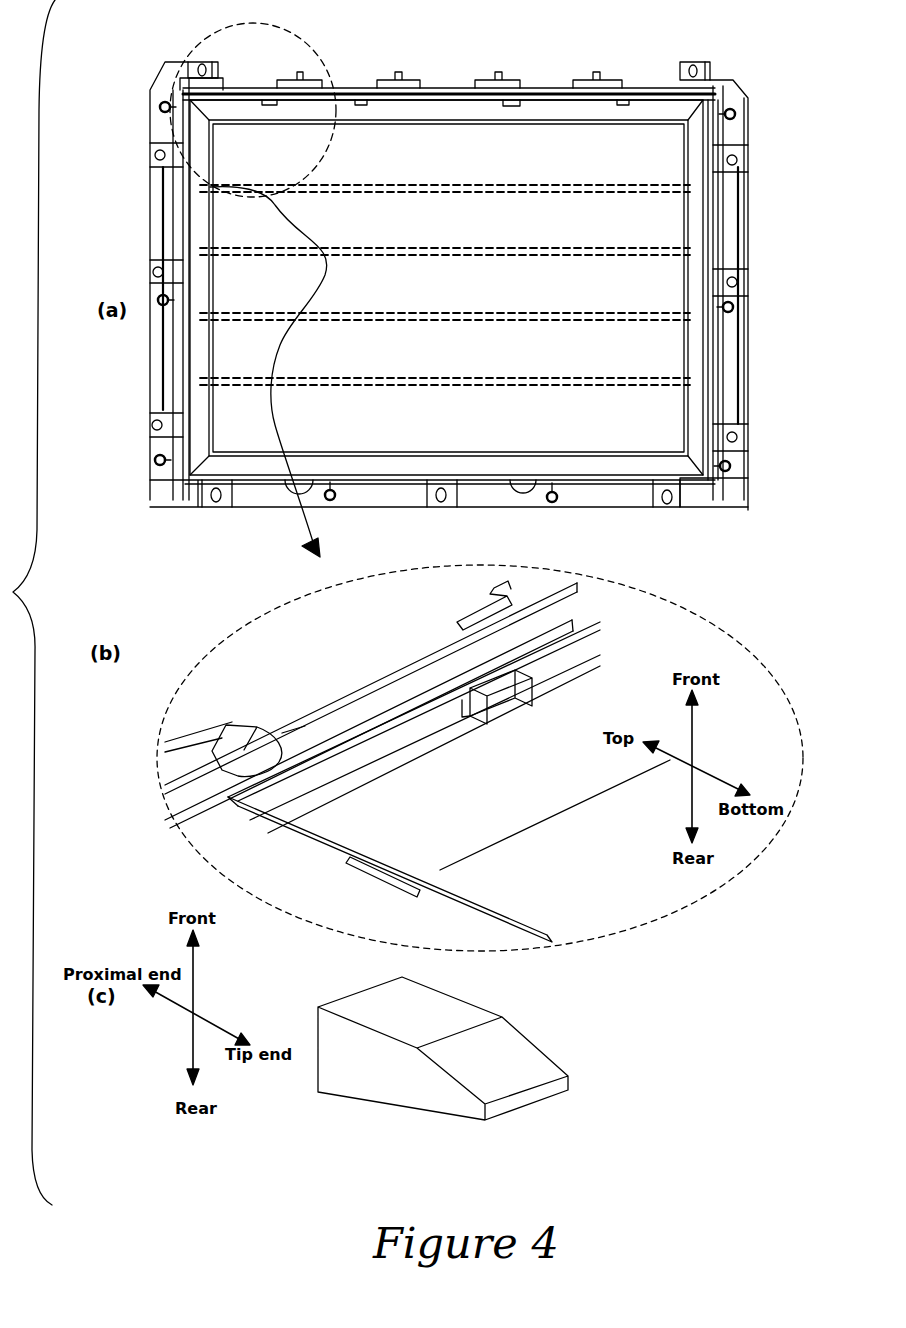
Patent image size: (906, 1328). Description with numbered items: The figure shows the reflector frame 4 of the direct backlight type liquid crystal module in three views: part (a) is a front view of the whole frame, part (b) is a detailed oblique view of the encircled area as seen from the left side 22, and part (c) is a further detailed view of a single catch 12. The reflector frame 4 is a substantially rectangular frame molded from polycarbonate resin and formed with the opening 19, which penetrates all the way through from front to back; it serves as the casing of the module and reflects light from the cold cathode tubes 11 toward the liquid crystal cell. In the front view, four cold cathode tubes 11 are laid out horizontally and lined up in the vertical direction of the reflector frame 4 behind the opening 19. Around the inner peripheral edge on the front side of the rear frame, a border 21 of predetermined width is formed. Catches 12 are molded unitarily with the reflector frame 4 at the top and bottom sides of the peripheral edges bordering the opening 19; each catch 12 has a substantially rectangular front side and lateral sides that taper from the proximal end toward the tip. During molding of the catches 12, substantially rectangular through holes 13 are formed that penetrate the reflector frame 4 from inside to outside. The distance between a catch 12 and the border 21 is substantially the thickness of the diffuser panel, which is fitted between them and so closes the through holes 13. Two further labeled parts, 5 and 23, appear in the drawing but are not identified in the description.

The reflector frame 4 is at (712, 80).
The fixing member tab 5 is at (600, 90).
The cold cathode tubes 11 is at (580, 383).
The catch 12 is at (273, 100).
The through holes 13 is at (519, 690).
The opening 19 is at (512, 558).
The border 21 is at (407, 752).
The left side 22 is at (200, 228).
The frame rail 23 is at (428, 115).